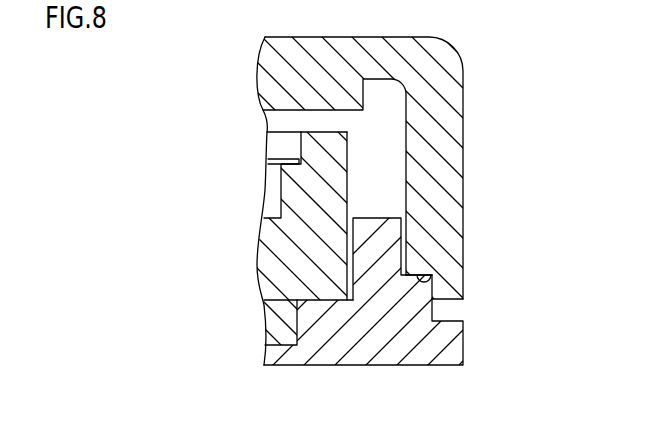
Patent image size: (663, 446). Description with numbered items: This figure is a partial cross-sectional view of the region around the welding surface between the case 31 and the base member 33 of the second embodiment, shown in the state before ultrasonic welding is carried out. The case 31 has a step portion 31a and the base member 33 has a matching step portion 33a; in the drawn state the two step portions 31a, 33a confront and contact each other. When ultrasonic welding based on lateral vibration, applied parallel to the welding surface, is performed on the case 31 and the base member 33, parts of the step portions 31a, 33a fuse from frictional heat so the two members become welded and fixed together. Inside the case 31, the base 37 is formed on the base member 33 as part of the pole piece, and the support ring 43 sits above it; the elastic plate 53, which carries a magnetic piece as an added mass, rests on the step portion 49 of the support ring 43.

The case 31 is at (450, 177).
The step portion of the case 31a is at (436, 289).
The base member 33 is at (460, 357).
The step portion of the base member 33a is at (424, 273).
The base 37 is at (279, 343).
The support ring 43 is at (283, 284).
The step portion of the support ring 49 is at (284, 167).
The elastic plate 53 is at (280, 158).